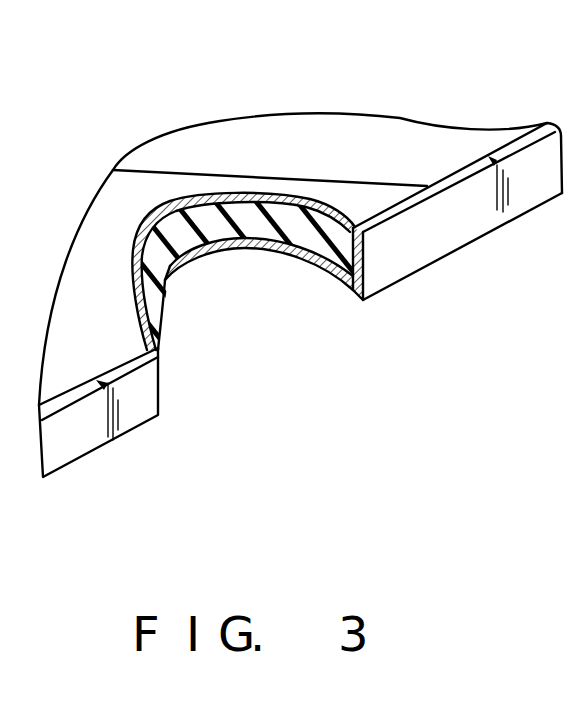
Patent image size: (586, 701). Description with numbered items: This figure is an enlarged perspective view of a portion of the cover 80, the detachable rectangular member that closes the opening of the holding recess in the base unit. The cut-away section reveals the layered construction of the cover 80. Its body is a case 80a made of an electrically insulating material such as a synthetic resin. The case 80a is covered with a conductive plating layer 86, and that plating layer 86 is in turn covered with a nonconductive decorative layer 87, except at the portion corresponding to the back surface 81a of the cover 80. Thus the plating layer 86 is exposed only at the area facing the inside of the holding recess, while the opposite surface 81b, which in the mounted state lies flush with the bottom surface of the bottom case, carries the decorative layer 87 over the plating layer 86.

The cover 80 is at (416, 273).
The case 80a is at (268, 247).
The back surface 81a is at (222, 138).
The surface 81b is at (342, 288).
The conductive plating layer 86 is at (383, 135).
The nonconductive decorative layer 87 is at (538, 187).